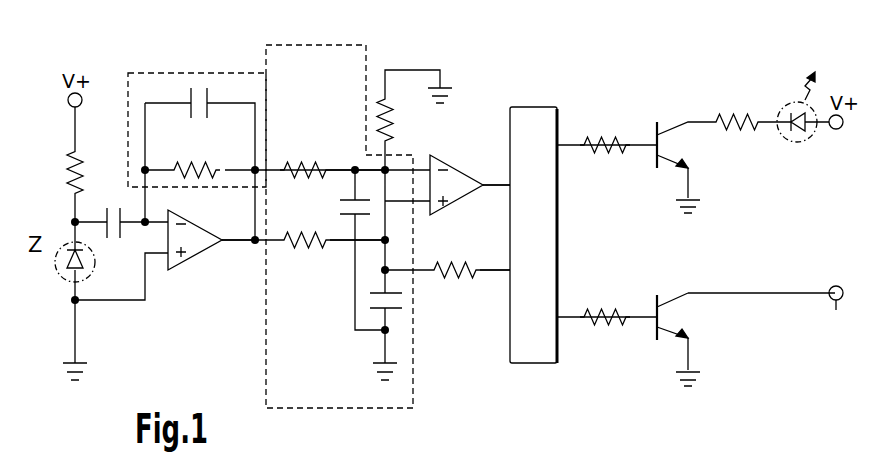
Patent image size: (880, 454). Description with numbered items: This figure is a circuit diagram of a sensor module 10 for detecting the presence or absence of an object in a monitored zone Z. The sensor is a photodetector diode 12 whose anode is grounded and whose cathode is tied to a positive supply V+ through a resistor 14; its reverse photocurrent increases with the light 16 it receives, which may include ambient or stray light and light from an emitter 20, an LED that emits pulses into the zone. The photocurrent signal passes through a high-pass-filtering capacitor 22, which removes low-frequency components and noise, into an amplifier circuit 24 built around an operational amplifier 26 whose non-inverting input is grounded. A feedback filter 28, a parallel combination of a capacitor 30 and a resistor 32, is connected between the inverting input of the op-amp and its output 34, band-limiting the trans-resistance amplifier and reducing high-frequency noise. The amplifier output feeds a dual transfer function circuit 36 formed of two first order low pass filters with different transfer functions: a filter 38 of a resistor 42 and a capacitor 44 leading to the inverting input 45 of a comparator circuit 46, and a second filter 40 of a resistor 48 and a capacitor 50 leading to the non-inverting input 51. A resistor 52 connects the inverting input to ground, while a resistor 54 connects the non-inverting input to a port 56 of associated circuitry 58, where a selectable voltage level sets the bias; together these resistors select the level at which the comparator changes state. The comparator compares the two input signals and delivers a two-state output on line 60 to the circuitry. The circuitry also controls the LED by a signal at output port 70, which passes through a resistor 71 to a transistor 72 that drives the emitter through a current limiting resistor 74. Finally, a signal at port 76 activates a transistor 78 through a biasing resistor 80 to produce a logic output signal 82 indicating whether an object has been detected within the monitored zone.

The sensor module 10 is at (522, 70).
The photodetector diode 12 is at (95, 268).
The resistor 14 is at (70, 162).
The light 16 is at (52, 286).
The emitter 20 is at (795, 142).
The high-pass-filtering capacitor 22 is at (115, 208).
The amplifier circuit 24 is at (203, 270).
The operational amplifier 26 is at (203, 243).
The feedback filter 28 is at (152, 72).
The capacitor 30 is at (198, 95).
The resistor 32 is at (193, 170).
The output 34 is at (253, 238).
The dual transfer function circuit 36 is at (340, 45).
The filter 38 is at (300, 160).
The second filter 40 is at (338, 258).
The resistor 42 is at (308, 174).
The capacitor 44 is at (347, 195).
The inverting input 45 is at (356, 165).
The comparator circuit 46 is at (466, 182).
The resistor 48 is at (305, 246).
The capacitor 50 is at (372, 298).
The non-inverting input 51 is at (393, 238).
The resistor 52 is at (395, 125).
The resistor 54 is at (448, 276).
The port 56 is at (497, 273).
The circuitry 58 is at (523, 366).
The line 60 is at (493, 188).
The output port 70 is at (567, 143).
The resistor 71 is at (604, 150).
The transistor 72 is at (667, 120).
The current limiting resistor 74 is at (742, 108).
The port 76 is at (567, 315).
The transistor 78 is at (665, 293).
The biasing resistor 80 is at (604, 322).
The logic output signal 82 is at (837, 314).